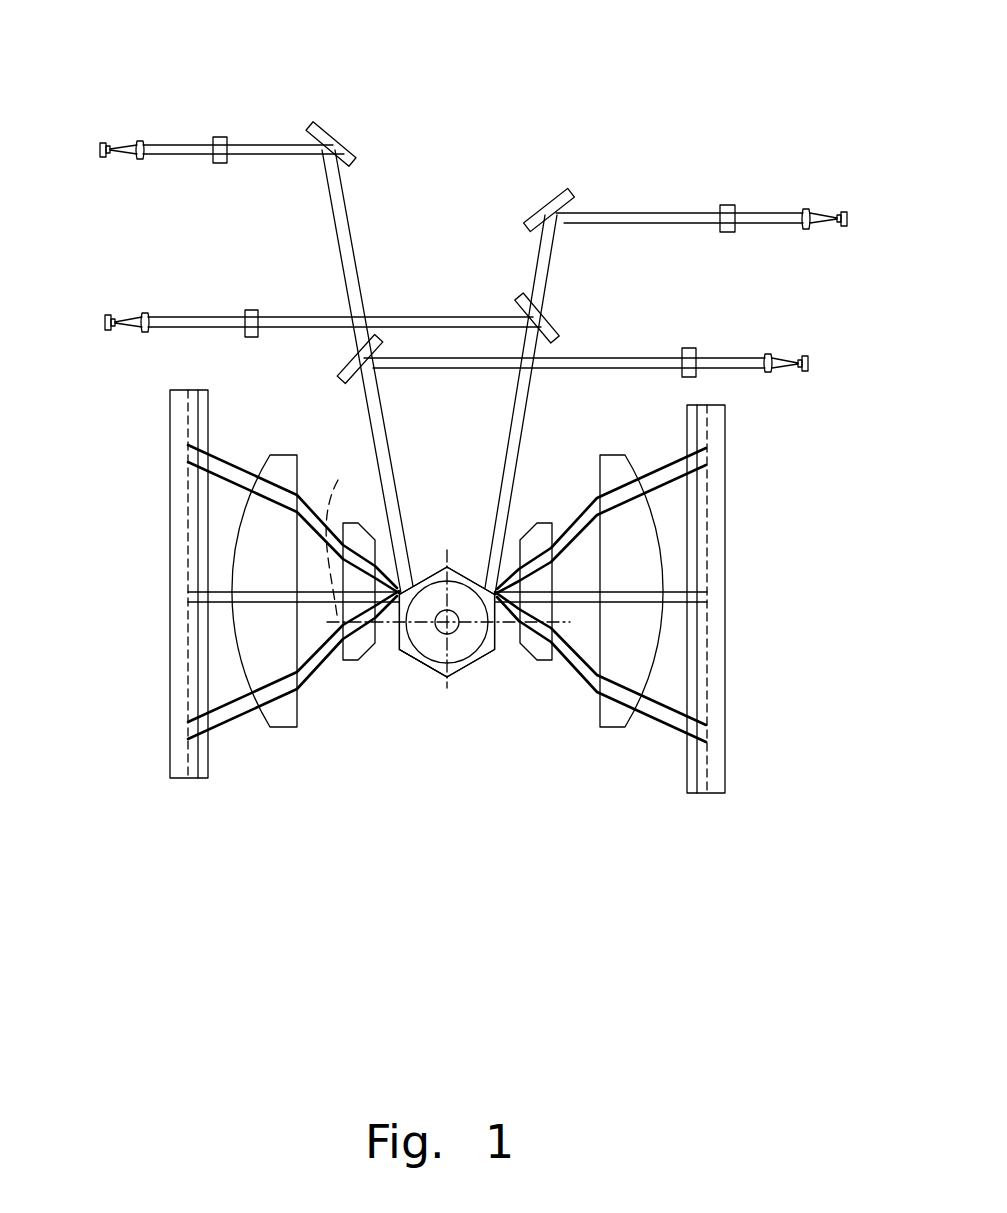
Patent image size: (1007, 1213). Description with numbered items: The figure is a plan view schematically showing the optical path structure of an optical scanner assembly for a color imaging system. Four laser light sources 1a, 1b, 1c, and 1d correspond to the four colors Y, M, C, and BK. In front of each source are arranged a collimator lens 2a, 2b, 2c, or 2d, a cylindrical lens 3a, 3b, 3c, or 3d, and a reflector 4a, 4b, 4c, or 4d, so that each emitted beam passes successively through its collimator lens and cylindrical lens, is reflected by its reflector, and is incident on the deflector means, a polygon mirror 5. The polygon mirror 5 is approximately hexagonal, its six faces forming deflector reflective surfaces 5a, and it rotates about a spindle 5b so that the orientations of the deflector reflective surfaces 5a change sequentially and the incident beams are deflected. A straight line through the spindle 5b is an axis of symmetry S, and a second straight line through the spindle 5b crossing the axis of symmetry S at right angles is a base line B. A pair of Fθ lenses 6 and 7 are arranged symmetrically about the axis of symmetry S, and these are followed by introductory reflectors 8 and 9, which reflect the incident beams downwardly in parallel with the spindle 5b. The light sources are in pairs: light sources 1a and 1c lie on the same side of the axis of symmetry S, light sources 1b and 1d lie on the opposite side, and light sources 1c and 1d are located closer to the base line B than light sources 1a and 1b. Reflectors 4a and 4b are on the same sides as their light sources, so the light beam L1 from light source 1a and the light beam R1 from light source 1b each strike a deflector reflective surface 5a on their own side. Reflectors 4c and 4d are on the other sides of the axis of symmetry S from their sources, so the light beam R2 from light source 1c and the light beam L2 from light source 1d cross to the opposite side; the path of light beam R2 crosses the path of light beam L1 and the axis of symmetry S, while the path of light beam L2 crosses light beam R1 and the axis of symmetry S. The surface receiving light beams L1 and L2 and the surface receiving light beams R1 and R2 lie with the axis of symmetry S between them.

The laser light source 1a is at (107, 141).
The collimator lens 2a is at (140, 139).
The cylindrical lens 3a is at (223, 136).
The reflector 4a is at (323, 124).
The laser light source 1b is at (837, 210).
The collimator lens 2b is at (817, 206).
The cylindrical lens 3b is at (730, 203).
The reflector 4b is at (545, 195).
The laser light source 1c is at (110, 313).
The collimator lens 2c is at (145, 310).
The cylindrical lens 3c is at (257, 308).
The reflector 4c is at (522, 296).
The laser light source 1d is at (803, 355).
The collimator lens 2d is at (768, 352).
The cylindrical lens 3d is at (690, 347).
The reflector 4d is at (340, 381).
The light beam L1 is at (287, 157).
The light beam R1 is at (625, 208).
The light beam L2 is at (595, 370).
The light beam R2 is at (407, 316).
The polygon mirror 5 is at (463, 667).
The deflector reflective surface 5a is at (432, 568).
The spindle 5b is at (416, 663).
The axis of symmetry S is at (448, 690).
The base line B is at (338, 529).
The Fθ lens 6 is at (327, 672).
The Fθ lens 7 is at (565, 667).
The introductory reflector 8 is at (183, 618).
The introductory reflector 9 is at (714, 637).